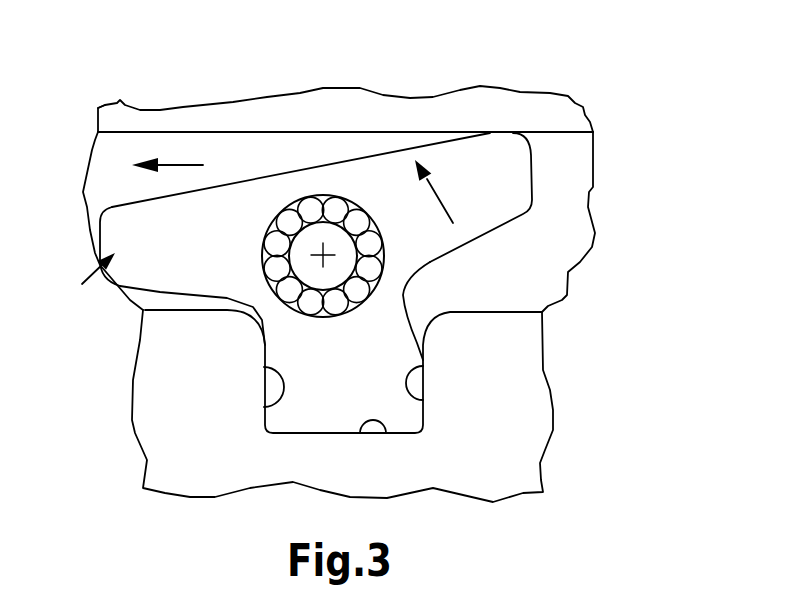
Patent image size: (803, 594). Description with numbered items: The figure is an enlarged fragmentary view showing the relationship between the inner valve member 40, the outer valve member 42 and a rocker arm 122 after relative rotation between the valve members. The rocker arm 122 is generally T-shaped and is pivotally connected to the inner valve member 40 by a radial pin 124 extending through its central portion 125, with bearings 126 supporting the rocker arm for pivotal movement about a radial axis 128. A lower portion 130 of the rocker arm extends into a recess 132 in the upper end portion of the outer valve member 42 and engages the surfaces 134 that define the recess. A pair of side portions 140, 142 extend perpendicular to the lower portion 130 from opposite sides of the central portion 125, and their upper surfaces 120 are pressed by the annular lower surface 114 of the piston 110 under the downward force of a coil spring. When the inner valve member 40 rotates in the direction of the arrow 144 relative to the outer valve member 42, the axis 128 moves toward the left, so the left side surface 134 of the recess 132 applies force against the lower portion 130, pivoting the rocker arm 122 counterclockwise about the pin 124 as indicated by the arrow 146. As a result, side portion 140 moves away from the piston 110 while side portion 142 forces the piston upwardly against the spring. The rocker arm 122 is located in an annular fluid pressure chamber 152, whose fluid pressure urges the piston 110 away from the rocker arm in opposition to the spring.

The inner valve member 40 is at (563, 250).
The outer valve member 42 is at (527, 385).
The piston 110 is at (568, 103).
The annular lower surface 114 is at (572, 133).
The upper surfaces 120 is at (247, 133).
The rocker arm 122 is at (88, 272).
The radial pin 124 is at (342, 242).
The central portion 125 is at (395, 237).
The bearings 126 is at (287, 283).
The radial axis 128 is at (323, 252).
The lower portion 130 is at (318, 390).
The recess 132 is at (385, 435).
The surfaces 134 is at (268, 410).
The side portion 140 is at (123, 227).
The side portion 142 is at (450, 157).
The arrow 144 is at (180, 162).
The arrow 146 is at (483, 207).
The annular fluid pressure chamber 152 is at (553, 197).